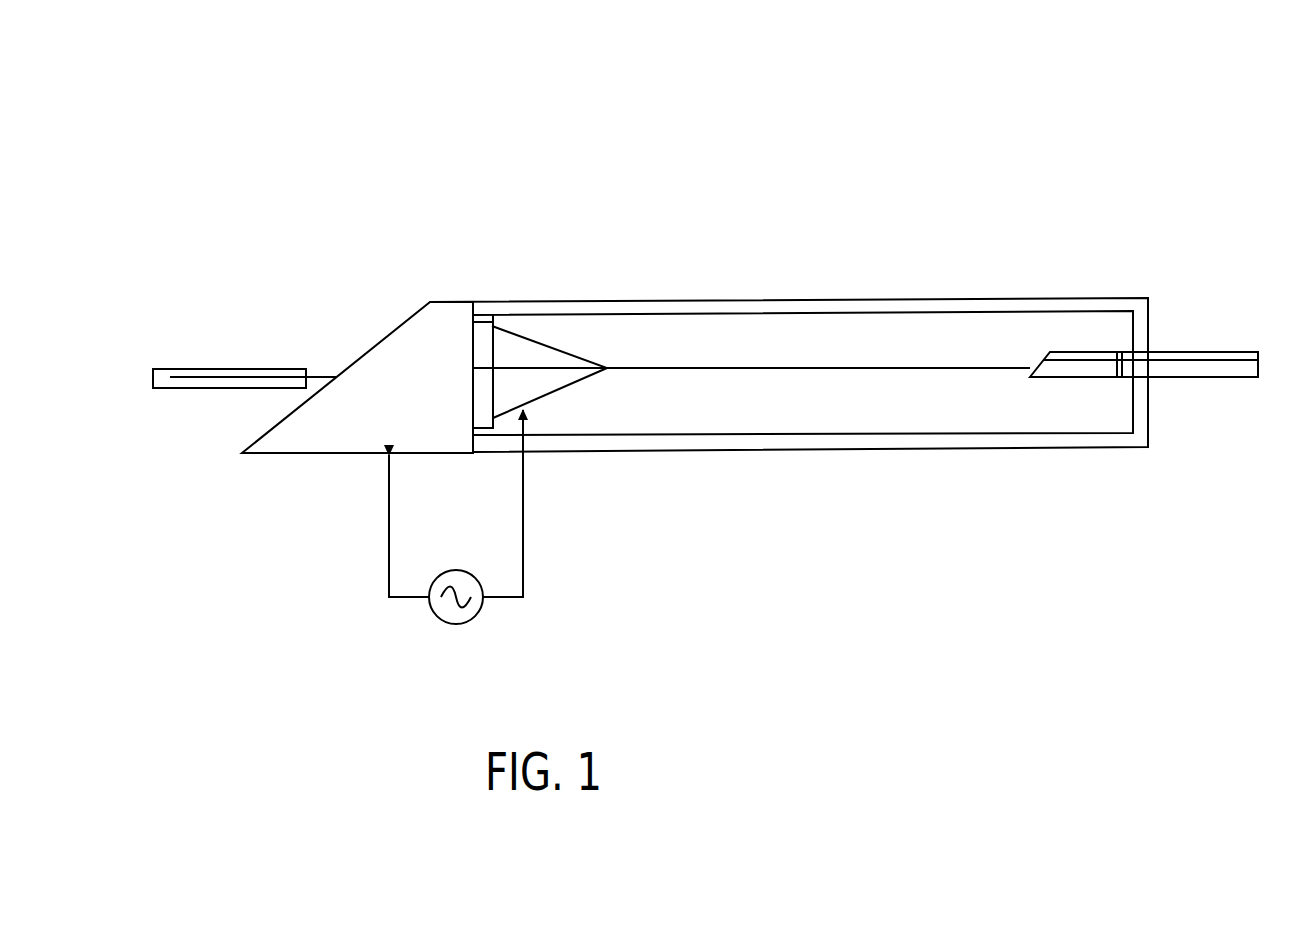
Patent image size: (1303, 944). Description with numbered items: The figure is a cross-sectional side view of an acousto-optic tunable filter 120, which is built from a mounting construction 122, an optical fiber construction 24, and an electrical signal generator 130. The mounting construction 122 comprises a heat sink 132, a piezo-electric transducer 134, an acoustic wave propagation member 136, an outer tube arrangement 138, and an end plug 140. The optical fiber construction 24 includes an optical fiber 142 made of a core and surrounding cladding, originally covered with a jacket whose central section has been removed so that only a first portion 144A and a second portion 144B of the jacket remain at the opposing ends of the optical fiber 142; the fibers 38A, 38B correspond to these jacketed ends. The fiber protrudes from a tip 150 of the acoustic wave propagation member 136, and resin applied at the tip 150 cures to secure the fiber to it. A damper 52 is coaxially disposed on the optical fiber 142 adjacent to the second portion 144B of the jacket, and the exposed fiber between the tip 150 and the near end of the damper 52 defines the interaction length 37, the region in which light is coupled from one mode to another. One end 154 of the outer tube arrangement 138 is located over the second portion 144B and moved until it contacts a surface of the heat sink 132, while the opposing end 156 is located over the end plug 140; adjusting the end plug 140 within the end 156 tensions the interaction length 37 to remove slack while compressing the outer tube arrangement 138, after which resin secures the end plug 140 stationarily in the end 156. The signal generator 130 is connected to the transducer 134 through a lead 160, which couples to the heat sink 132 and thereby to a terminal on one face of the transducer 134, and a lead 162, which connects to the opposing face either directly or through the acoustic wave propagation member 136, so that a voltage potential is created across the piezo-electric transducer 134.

The filter 120 is at (176, 150).
The mounting construction 122 is at (618, 276).
The optical fiber construction 24 is at (329, 360).
The heat sink 132 is at (395, 366).
The piezo-electric transducer 134 is at (490, 321).
The end of the outer tube arrangement 154 is at (487, 303).
The input optical fiber 38A is at (213, 366).
The first portion of the jacket 144A is at (172, 368).
The tip of the acoustic wave propagation member 150 is at (608, 373).
The acoustic wave propagation member 136 is at (549, 391).
The optical fiber 142 is at (735, 368).
The interaction length 37 is at (1033, 365).
The damper 52 is at (1061, 346).
The second end of the outer tube arrangement 156 is at (1132, 297).
The output optical fiber 38B is at (1179, 345).
The second portion of the jacket 144B is at (1227, 352).
The end plug 140 is at (1146, 408).
The outer tube arrangement 138 is at (989, 440).
The electrical signal generator 130 is at (503, 614).
The lead 160 is at (388, 521).
The lead 162 is at (558, 552).